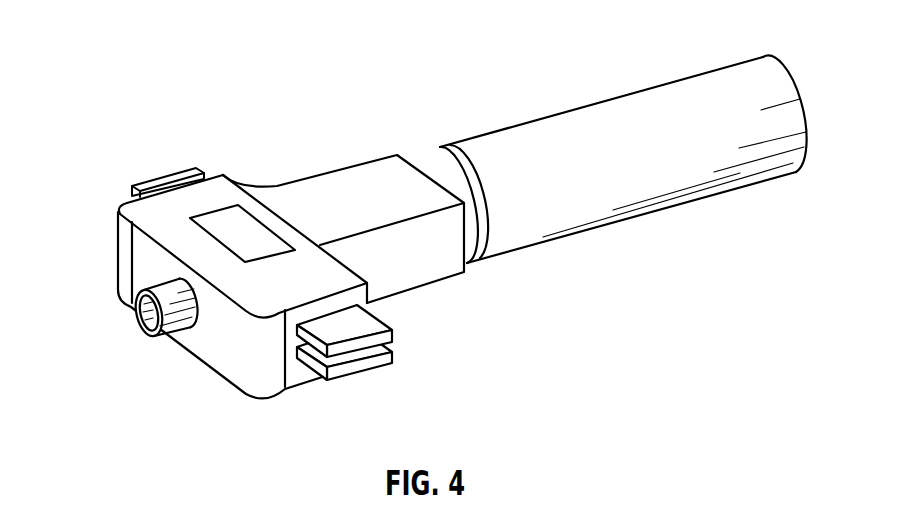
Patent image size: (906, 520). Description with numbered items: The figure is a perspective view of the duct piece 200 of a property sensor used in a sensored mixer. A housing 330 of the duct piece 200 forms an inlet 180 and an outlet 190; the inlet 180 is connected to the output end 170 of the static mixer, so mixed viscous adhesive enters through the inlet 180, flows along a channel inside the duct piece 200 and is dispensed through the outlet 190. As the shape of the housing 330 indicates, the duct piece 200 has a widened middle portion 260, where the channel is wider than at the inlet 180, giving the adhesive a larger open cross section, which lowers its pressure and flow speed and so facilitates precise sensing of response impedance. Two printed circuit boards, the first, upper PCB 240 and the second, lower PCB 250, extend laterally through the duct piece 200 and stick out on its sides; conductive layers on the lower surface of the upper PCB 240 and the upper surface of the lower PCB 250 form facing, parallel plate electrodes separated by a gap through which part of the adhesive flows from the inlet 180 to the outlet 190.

The output end 170 is at (557, 128).
The inlet 180 is at (393, 168).
The outlet 190 is at (158, 293).
The duct piece 200 is at (199, 92).
The first, upper PCB 240 is at (391, 335).
The second, lower PCB 250 is at (391, 356).
The widened middle portion 260 is at (175, 188).
The housing 330 is at (218, 192).